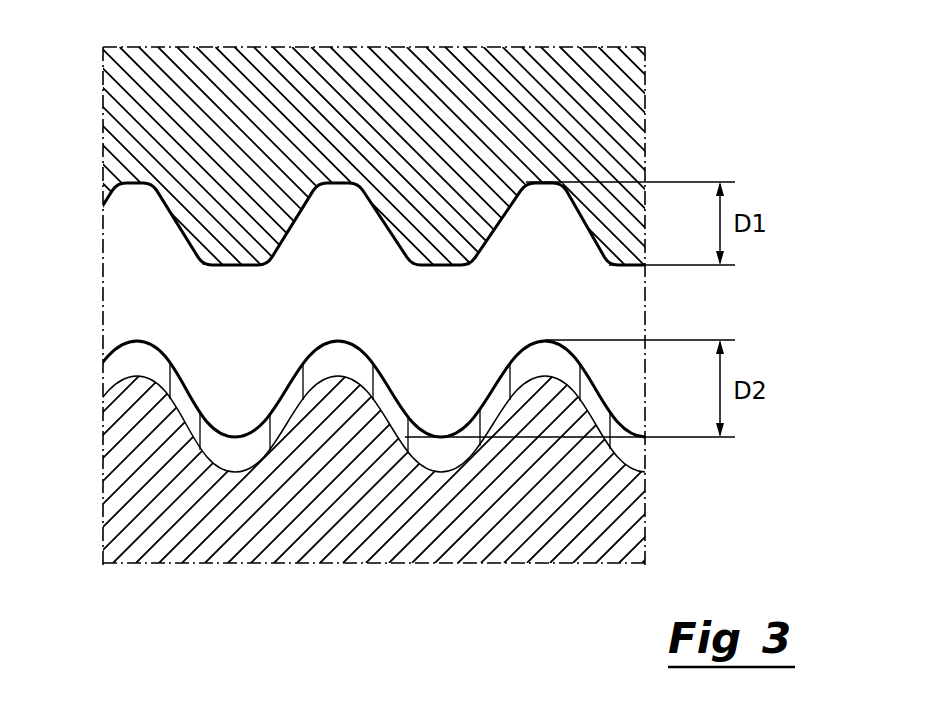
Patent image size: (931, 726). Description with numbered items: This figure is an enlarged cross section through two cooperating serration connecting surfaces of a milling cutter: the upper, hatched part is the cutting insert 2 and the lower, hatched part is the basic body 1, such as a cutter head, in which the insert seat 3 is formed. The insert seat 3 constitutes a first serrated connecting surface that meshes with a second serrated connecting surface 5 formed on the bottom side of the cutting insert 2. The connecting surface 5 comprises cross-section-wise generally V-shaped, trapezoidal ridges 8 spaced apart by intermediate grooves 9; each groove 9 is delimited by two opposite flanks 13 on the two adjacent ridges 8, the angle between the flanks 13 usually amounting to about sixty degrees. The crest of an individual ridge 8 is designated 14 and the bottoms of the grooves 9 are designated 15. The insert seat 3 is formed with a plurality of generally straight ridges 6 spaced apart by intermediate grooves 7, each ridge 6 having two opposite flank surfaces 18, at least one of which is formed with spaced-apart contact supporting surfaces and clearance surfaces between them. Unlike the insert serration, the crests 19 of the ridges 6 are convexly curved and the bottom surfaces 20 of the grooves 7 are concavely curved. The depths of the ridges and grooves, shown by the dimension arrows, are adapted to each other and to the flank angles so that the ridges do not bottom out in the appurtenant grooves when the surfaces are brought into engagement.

The basic body 1 is at (633, 522).
The cutting insert 2 is at (628, 114).
The insert seat 3 is at (620, 360).
The second serrated connecting surface 5 is at (128, 242).
The ridges 6 is at (345, 395).
The grooves 7 is at (233, 422).
The ridges 8 is at (237, 258).
The grooves 9 is at (340, 256).
The flanks 13 is at (296, 222).
The crest 14 is at (217, 268).
The groove bottoms 15 is at (547, 184).
The flank surfaces 18 is at (285, 392).
The crests 19 is at (330, 340).
The bottom surfaces 20 is at (415, 425).